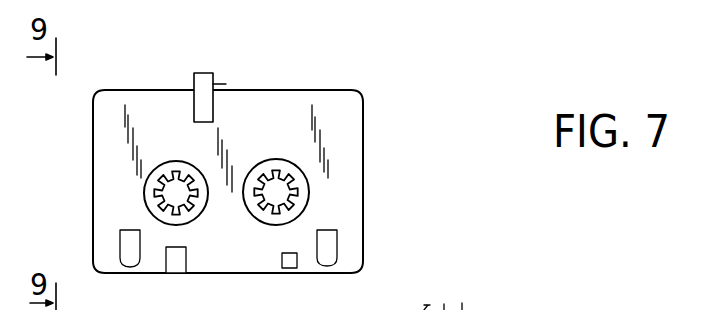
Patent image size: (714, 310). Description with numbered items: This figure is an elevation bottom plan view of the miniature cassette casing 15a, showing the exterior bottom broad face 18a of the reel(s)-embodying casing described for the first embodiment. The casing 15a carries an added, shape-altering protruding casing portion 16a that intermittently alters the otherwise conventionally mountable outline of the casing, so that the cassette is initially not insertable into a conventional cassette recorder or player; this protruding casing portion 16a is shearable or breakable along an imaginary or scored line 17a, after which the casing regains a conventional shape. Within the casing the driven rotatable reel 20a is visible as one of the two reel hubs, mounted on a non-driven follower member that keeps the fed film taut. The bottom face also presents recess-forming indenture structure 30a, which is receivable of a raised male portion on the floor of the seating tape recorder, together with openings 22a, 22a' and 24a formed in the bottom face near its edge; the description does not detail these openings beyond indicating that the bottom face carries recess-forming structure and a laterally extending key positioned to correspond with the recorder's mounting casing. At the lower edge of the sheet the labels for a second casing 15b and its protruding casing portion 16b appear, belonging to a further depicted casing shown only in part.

The cassette casing 15a is at (337, 72).
The protruding casing portion 16a is at (226, 84).
The scored line 17a is at (200, 89).
The broad face of casing 18a is at (346, 118).
The driven rotatable reel 20a is at (310, 203).
The slot 22a is at (381, 253).
The slot 22a' is at (146, 270).
The rectangular opening 30a is at (180, 267).
The small opening 24a is at (297, 262).
The housing top wall (second housing) 16b is at (525, 309).
The second housing 15b is at (622, 309).